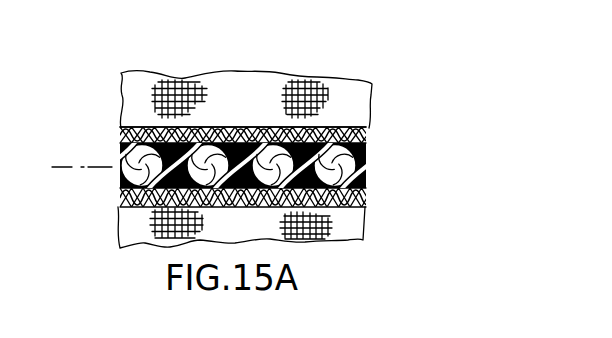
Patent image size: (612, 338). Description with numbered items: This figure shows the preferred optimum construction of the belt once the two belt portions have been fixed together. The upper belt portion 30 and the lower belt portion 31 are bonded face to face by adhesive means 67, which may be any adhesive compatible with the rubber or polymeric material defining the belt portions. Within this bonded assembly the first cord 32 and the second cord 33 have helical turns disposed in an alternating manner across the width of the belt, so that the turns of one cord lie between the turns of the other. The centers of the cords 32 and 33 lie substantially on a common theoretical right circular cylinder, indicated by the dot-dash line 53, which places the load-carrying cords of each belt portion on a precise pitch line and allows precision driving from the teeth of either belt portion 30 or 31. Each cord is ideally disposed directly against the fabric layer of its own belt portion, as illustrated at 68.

The belt portion 30 is at (321, 71).
The belt portion 31 is at (349, 250).
The first cord 32 is at (189, 152).
The second cord 33 is at (133, 173).
The dot-dash line 53 is at (67, 167).
The adhesive means 67 is at (358, 149).
The cord disposed against fabric layer 68 is at (201, 152).